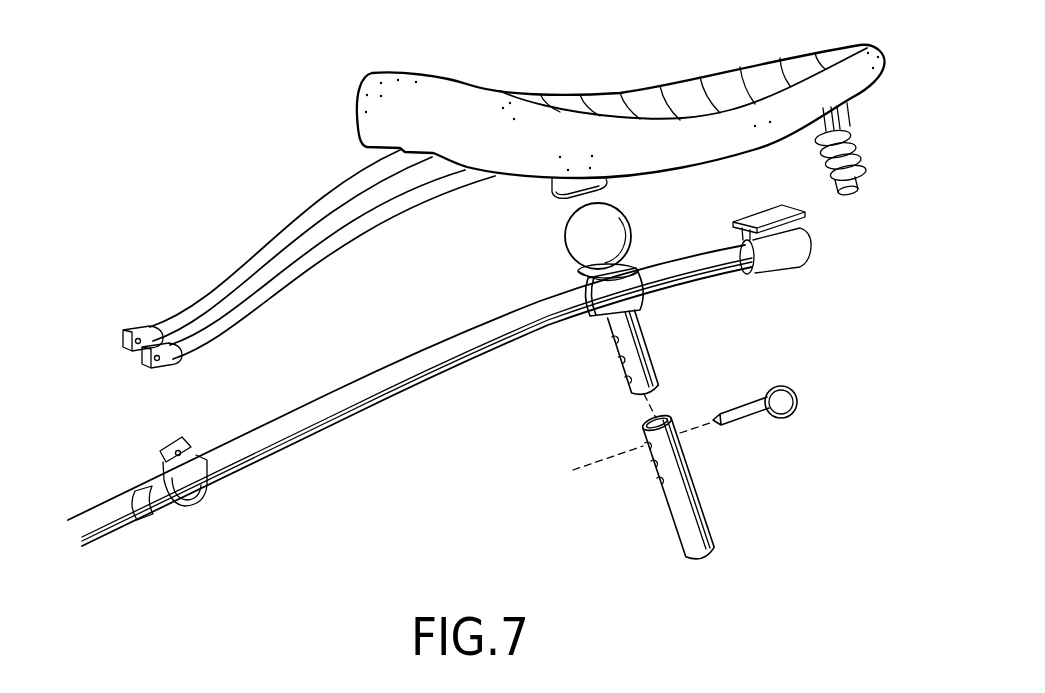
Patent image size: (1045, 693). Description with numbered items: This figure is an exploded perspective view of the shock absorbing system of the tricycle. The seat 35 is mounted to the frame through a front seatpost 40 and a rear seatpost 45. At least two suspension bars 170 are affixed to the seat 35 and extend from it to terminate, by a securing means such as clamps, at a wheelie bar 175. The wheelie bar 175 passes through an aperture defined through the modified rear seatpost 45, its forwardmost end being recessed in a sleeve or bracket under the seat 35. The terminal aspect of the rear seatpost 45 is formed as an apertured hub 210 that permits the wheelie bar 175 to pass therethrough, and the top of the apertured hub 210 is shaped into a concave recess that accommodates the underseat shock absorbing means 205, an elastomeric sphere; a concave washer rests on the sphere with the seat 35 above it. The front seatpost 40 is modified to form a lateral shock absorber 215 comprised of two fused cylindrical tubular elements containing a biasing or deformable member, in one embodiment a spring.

The seat 35 is at (393, 72).
The suspension bars 170 is at (357, 210).
The wheelie bar 175 is at (403, 357).
The underseat shock absorbing means 205 is at (565, 237).
The apertured hub 210 is at (641, 300).
The rear seatpost 45 is at (611, 330).
The lateral shock absorber 215 is at (863, 162).
The front seatpost 40 is at (864, 182).